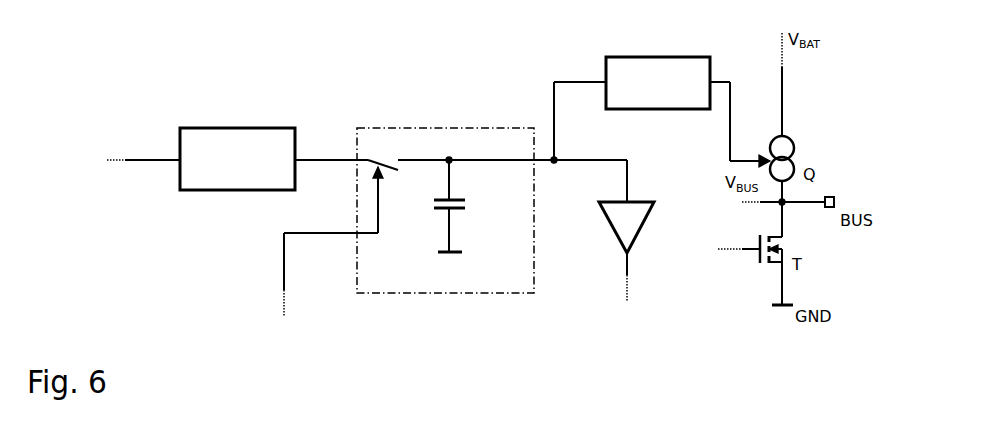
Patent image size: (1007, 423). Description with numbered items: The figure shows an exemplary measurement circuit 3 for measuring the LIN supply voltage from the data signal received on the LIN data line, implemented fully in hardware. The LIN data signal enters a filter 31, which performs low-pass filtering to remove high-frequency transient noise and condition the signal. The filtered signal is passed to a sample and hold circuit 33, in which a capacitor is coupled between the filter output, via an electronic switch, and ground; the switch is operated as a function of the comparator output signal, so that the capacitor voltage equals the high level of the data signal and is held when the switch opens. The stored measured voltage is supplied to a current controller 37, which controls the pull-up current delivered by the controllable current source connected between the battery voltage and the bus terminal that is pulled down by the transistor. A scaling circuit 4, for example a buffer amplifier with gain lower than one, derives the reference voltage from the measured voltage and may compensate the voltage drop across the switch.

The measurement circuit 3 is at (388, 56).
The filter 31 is at (237, 159).
The sample and hold circuit 33 is at (458, 221).
The current controller 37 is at (658, 83).
The scaling circuit 4 is at (653, 234).